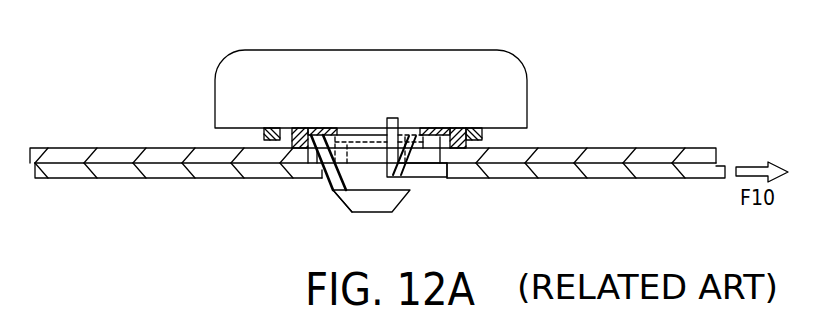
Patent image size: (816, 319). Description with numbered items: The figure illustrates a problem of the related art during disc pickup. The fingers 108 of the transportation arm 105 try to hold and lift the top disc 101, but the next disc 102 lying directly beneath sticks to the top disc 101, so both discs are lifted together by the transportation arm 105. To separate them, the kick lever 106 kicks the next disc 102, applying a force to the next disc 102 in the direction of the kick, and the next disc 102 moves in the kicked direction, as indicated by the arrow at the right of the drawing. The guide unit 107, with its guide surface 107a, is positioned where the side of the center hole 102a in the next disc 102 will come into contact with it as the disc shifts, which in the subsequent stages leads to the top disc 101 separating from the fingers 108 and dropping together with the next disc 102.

The top disc 101 is at (640, 147).
The next disc 102 is at (627, 180).
The center hole 102a is at (321, 181).
The transportation arm 105 is at (215, 96).
The kick lever 106 is at (428, 178).
The guide unit 107 is at (370, 214).
The guide surface 107a is at (333, 189).
The fingers 108 is at (336, 153).